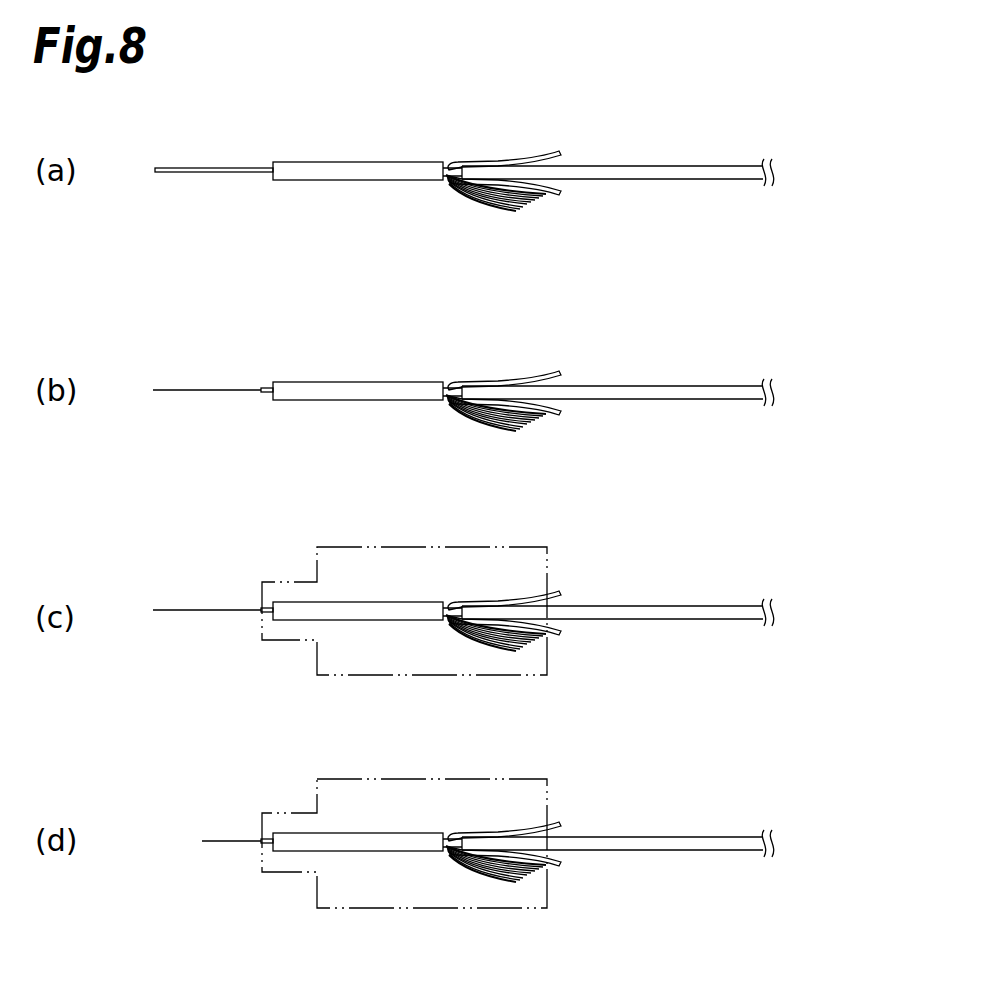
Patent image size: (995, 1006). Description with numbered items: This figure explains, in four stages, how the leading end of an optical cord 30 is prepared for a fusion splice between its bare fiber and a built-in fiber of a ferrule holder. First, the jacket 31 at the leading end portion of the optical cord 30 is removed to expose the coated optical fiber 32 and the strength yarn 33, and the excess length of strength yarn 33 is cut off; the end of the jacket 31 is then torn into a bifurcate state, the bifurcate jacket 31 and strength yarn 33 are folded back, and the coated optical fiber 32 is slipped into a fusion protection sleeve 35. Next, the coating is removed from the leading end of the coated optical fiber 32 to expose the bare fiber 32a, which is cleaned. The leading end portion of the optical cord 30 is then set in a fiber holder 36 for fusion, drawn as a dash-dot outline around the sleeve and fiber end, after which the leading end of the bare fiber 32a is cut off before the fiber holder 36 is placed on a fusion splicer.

The optical cord 30 is at (730, 163).
The jacket 31 is at (595, 164).
The coated optical fiber 32 is at (211, 168).
The bare fiber 32a is at (200, 387).
The strength yarn 33 is at (510, 209).
The fusion protection sleeve 35 is at (361, 170).
The fiber holder for fusion 36 is at (416, 546).